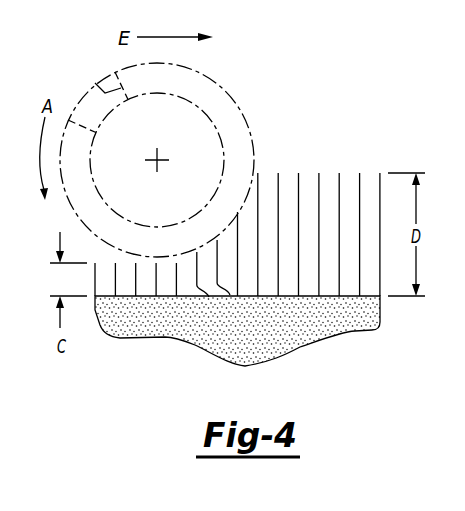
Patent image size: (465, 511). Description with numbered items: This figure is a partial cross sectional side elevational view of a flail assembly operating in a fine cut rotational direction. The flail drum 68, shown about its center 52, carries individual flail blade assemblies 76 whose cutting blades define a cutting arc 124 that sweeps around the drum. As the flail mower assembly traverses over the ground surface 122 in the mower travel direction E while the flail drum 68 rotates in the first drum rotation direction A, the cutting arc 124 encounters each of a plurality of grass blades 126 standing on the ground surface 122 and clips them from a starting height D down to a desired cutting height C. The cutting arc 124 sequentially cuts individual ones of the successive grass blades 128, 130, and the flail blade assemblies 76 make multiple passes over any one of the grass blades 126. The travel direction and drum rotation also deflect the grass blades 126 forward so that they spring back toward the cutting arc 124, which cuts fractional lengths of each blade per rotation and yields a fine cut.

The rotational axis 52 is at (163, 158).
The flail drum 68 is at (196, 112).
The flail blade assemblies 76 is at (95, 83).
The ground surface 122 is at (313, 322).
The cutting arc 124 is at (159, 63).
The grass blades 126 is at (344, 146).
The successive grass blade 128 is at (209, 297).
The successive grass blade 130 is at (230, 295).